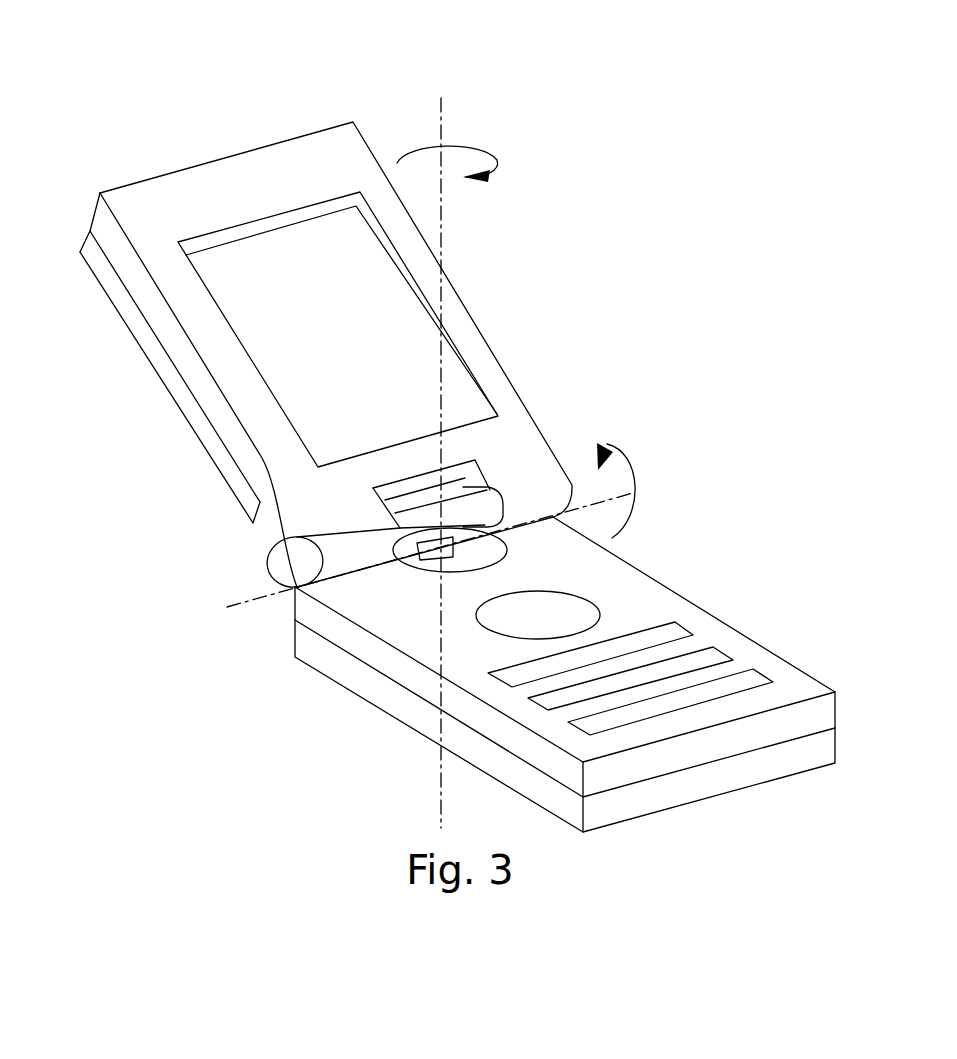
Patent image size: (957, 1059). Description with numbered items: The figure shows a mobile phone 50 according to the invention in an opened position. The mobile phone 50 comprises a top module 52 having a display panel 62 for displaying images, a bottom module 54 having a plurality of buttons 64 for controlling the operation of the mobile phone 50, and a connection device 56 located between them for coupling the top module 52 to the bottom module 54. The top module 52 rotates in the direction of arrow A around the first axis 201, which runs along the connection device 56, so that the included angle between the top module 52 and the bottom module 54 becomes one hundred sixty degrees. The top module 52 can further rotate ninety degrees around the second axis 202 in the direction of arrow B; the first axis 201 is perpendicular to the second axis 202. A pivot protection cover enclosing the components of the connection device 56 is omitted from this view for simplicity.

The mobile phone 50 is at (668, 246).
The top module 52 is at (243, 178).
The bottom module 54 is at (793, 762).
The connection device 56 is at (297, 537).
The display panel 62 is at (407, 333).
The buttons 64 is at (717, 653).
The first axis 201 is at (232, 607).
The second axis 202 is at (443, 118).